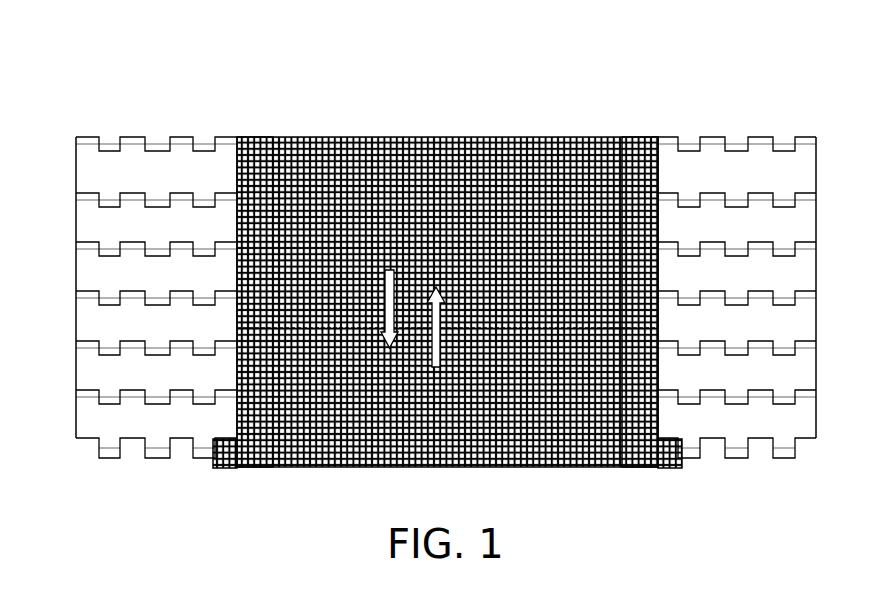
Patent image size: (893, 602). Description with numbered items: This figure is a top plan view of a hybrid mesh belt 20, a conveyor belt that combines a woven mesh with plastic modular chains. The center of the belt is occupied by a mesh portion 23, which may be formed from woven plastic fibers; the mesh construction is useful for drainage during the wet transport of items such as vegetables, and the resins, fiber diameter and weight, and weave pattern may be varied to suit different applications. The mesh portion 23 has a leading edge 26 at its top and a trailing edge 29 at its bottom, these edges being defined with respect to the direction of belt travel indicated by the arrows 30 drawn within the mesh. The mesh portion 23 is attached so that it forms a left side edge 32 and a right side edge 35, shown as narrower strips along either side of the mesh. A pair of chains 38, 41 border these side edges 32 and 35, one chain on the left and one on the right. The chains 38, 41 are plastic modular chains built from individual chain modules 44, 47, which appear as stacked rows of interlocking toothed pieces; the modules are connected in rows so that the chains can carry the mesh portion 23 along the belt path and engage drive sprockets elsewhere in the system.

The hybrid mesh belt 20 is at (450, 275).
The mesh portion 23 is at (380, 170).
The leading edge 26 is at (550, 142).
The trailing edge 29 is at (560, 462).
The arrows 30 is at (385, 330).
The side edge 32 is at (240, 170).
The side edge 35 is at (658, 157).
The chain 38 is at (97, 277).
The chain 41 is at (807, 275).
The chain module 44 is at (97, 368).
The chain module 47 is at (797, 177).